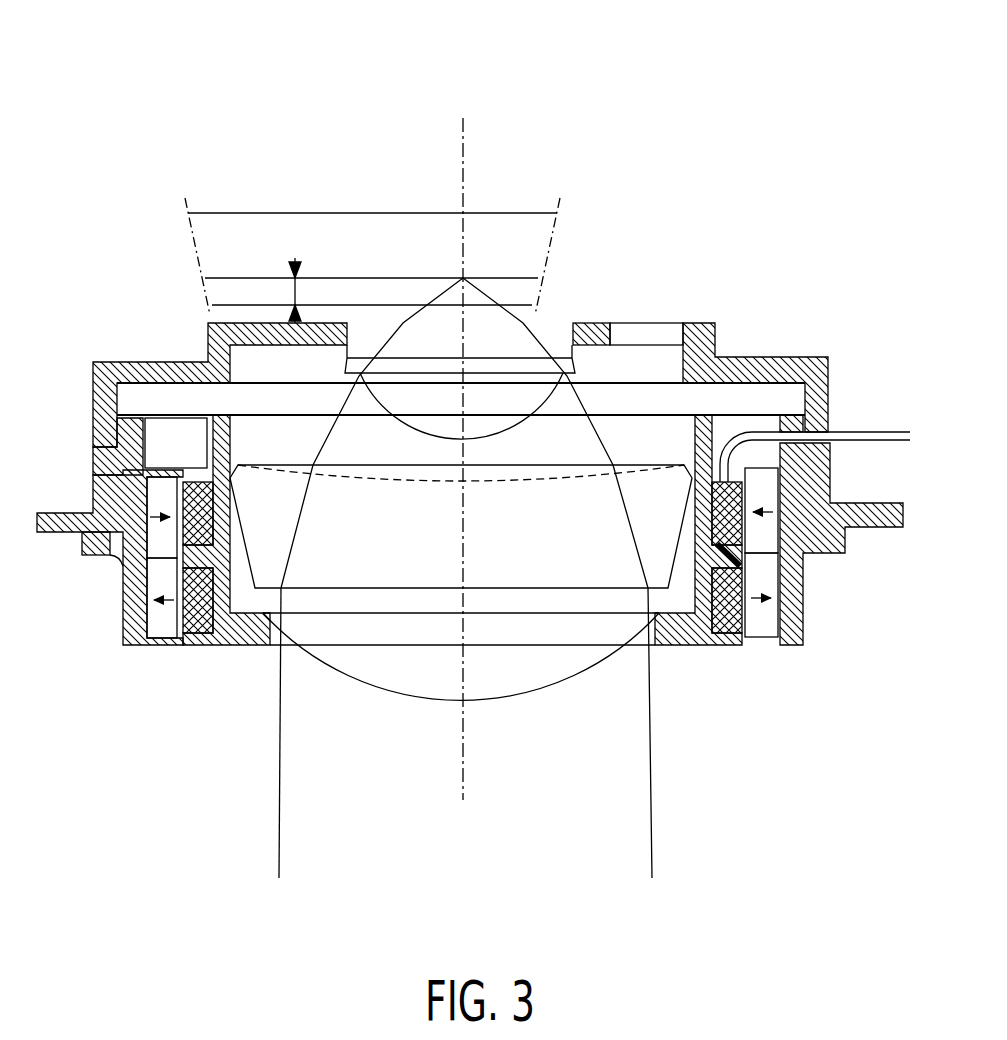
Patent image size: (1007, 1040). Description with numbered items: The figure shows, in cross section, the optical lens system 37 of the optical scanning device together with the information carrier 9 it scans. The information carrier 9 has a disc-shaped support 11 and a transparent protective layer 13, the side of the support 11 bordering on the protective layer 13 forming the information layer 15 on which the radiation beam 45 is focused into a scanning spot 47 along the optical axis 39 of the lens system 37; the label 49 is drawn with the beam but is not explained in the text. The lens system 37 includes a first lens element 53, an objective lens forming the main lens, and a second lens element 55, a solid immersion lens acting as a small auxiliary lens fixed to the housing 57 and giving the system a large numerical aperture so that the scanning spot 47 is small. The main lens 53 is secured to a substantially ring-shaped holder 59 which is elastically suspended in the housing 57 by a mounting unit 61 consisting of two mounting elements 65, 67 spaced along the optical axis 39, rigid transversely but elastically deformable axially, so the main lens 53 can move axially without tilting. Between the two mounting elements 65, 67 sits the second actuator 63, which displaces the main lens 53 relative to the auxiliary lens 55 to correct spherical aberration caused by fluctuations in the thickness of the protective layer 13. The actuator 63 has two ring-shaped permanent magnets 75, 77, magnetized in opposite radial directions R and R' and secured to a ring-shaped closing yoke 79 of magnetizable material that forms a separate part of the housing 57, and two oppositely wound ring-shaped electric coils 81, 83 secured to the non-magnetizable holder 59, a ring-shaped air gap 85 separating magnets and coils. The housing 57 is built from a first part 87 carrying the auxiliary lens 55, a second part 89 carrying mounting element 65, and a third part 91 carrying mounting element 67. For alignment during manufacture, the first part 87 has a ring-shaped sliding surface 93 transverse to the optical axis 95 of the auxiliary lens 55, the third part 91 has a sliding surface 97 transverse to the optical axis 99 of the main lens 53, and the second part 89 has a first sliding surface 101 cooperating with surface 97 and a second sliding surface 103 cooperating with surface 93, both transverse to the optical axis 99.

The information carrier 9 is at (262, 108).
The support 11 is at (397, 222).
The protective layer 13 is at (340, 242).
The information layer 15 is at (250, 275).
The optical lens system 37 is at (435, 778).
The optical axis 39 is at (466, 140).
The radiation beam 45 is at (531, 733).
The scanning spot 47 is at (466, 276).
The light beam 49 is at (652, 822).
The first lens element 53 is at (385, 690).
The second lens element 55 is at (580, 327).
The housing 57 is at (427, 359).
The holder 59 is at (705, 645).
The mounting unit 61 is at (454, 550).
The second actuator 63 is at (469, 575).
The mounting element 65 is at (637, 413).
The mounting element 67 is at (454, 564).
The permanent magnet 75 is at (153, 485).
The permanent magnet 77 is at (158, 637).
The closing yoke 79 is at (495, 547).
The electric coil 81 is at (213, 510).
The electric coil 83 is at (213, 586).
The air gap 85 is at (168, 492).
The first part 87 is at (103, 372).
The second part 89 is at (106, 587).
The third part 91 is at (133, 647).
The sliding surface 93 is at (110, 430).
The optical axis 95 is at (466, 405).
The sliding surface 97 is at (108, 558).
The optical axis 99 is at (462, 547).
The first sliding surface 101 is at (88, 530).
The second sliding surface 103 is at (98, 457).